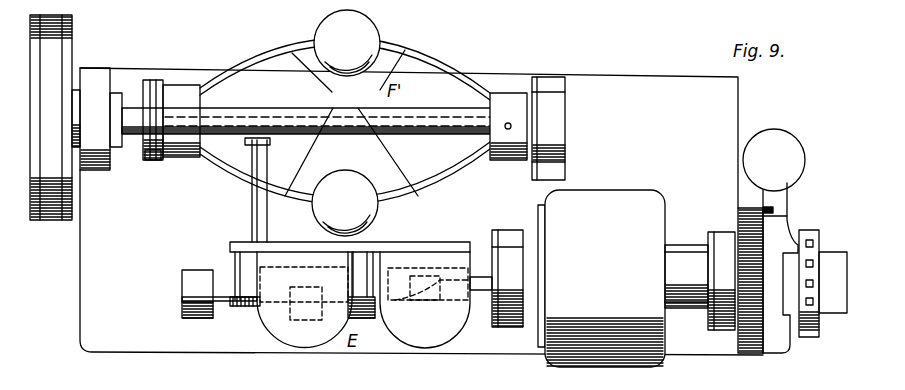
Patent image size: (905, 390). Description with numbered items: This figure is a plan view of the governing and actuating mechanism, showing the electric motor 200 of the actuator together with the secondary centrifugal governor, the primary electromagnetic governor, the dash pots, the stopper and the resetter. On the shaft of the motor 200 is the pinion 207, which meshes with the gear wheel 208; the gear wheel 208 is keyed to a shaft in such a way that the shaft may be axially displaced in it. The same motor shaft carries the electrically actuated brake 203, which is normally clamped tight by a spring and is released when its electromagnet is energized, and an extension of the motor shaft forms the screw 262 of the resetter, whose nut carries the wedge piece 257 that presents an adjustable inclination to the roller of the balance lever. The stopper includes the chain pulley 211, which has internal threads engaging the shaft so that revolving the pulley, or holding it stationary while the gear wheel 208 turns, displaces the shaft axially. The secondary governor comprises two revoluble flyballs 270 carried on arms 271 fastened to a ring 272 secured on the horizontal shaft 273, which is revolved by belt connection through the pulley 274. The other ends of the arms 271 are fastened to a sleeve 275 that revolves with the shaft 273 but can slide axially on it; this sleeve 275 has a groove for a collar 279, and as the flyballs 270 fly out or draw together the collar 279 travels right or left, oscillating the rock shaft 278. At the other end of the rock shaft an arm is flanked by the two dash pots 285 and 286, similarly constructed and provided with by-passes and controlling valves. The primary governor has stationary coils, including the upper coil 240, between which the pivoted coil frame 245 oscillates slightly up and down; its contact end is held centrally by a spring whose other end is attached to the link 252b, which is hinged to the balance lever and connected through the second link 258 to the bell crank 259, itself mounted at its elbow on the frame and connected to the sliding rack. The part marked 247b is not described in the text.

The pulley 274 is at (70, 44).
The horizontal shaft 273 is at (128, 107).
The collar 279 is at (158, 157).
The sleeve 275 is at (188, 95).
The arms 271 is at (322, 76).
The flyballs 270 is at (372, 33).
The ring 272 is at (513, 100).
The rock shaft 278 is at (233, 190).
The wedge piece 257 is at (465, 242).
The coil frame 245 is at (433, 232).
The upper stationary coil 240 is at (304, 279).
The dash pot 286 is at (297, 337).
The member 247b is at (437, 297).
The bell crank 259 is at (182, 297).
The dash pot 285 is at (182, 317).
The link 252b is at (236, 319).
The second link 258 is at (463, 347).
The screw 262 is at (467, 337).
The electric motor 200 is at (605, 278).
The pinion 207 is at (745, 253).
The electrically actuated brake 203 is at (793, 155).
The gear wheel 208 is at (765, 210).
The chain pulley 211 is at (817, 247).